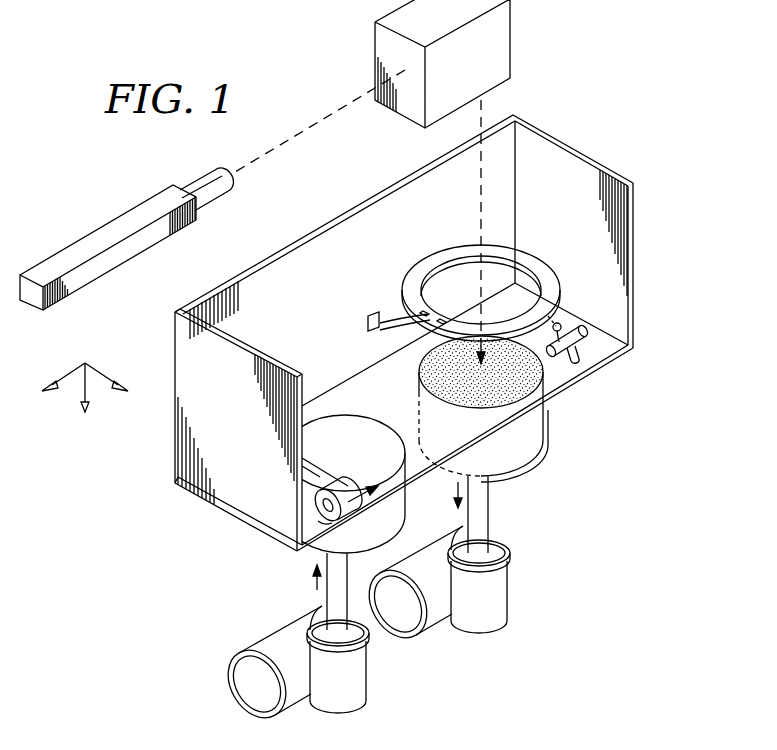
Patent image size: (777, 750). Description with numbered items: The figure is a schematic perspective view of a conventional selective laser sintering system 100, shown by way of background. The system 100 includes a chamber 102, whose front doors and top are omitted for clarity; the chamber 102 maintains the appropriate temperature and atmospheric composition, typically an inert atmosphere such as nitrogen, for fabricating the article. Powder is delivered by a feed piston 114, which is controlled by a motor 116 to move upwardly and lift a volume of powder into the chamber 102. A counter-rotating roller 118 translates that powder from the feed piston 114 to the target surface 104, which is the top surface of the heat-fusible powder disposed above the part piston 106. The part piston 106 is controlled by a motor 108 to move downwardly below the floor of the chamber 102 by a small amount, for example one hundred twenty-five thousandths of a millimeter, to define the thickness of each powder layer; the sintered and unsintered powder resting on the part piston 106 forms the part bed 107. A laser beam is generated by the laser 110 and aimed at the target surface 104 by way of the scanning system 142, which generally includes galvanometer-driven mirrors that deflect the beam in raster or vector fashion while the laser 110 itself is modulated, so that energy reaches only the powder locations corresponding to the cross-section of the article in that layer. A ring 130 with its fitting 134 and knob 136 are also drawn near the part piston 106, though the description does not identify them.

The selective laser sintering system 100 is at (658, 288).
The chamber 102 is at (596, 164).
The target surface 104 is at (420, 366).
The part piston 106 is at (546, 442).
The part bed 107 is at (428, 415).
The motor 108 is at (504, 593).
The laser 110 is at (88, 238).
The feed piston 114 is at (318, 552).
The motor 116 is at (362, 680).
The roller 118 is at (330, 488).
The ring 130 is at (418, 272).
The fitting 134 is at (586, 348).
The knob 136 is at (565, 325).
The scanning system 142 is at (510, 32).